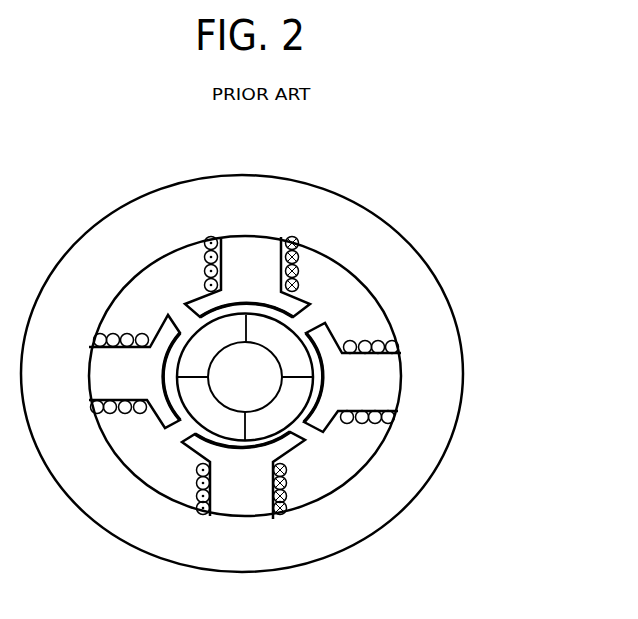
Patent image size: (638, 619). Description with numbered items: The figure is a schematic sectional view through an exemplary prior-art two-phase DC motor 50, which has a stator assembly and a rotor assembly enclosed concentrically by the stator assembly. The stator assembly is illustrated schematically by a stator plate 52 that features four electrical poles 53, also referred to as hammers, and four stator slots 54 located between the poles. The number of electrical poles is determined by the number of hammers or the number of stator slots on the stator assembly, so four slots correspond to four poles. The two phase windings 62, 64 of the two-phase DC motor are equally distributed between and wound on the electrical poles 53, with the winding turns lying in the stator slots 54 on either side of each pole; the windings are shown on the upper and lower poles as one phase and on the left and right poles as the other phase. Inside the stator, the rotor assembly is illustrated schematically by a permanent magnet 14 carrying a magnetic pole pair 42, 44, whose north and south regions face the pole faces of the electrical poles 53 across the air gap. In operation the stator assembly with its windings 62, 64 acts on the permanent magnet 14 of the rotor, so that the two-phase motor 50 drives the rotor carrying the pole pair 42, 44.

The permanent magnet 14 is at (308, 433).
The magnetic pole 42 is at (292, 342).
The magnetic pole 44 is at (205, 333).
The two-phase DC motor 50 is at (450, 232).
The stator plate 52 is at (432, 317).
The electrical poles 53 is at (380, 382).
The stator slots 54 is at (182, 433).
The phase winding 62 is at (310, 242).
The phase winding 64 is at (397, 415).